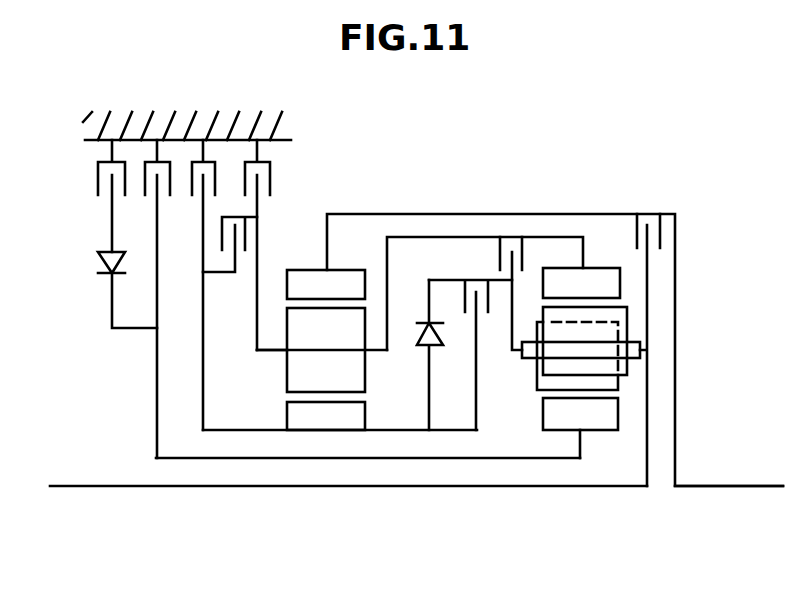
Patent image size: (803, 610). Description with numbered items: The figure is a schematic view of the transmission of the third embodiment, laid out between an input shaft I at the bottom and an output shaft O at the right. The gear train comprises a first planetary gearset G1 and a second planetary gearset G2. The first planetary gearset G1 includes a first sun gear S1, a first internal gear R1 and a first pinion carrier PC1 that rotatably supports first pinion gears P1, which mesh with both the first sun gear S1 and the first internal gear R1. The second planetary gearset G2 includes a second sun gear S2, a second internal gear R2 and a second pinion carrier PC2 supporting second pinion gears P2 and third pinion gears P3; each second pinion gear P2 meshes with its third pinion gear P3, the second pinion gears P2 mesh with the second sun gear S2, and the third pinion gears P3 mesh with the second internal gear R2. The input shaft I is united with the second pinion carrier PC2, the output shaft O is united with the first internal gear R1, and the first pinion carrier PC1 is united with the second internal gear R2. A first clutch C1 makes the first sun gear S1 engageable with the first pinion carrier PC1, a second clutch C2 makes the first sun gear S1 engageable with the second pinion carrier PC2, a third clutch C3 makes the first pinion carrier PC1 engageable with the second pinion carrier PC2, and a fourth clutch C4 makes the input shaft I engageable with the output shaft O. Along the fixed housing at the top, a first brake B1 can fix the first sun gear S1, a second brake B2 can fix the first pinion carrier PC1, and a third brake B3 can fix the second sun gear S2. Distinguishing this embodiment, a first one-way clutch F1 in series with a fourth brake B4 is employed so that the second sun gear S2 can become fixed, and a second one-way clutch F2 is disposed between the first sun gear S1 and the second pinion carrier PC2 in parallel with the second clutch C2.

The input shaft I is at (112, 485).
The output shaft O is at (710, 484).
The first brake B1 is at (195, 203).
The second brake B2 is at (281, 164).
The third brake B3 is at (150, 197).
The fourth brake B4 is at (93, 191).
The first clutch C1 is at (264, 230).
The second clutch C2 is at (465, 273).
The third clutch C3 is at (510, 233).
The fourth clutch C4 is at (663, 211).
The first one-way clutch F1 is at (100, 283).
The second one-way clutch F2 is at (436, 352).
The first planetary gearset G1 is at (315, 236).
The second planetary gearset G2 is at (605, 260).
The first internal gear R1 is at (337, 282).
The second internal gear R2 is at (620, 281).
The first pinion gears P1 is at (365, 372).
The second pinion gears P2 is at (536, 391).
The third pinion gears P3 is at (627, 318).
The first sun gear S1 is at (365, 412).
The second sun gear S2 is at (543, 418).
The first pinion carrier PC1 is at (257, 362).
The second pinion carrier PC2 is at (513, 358).